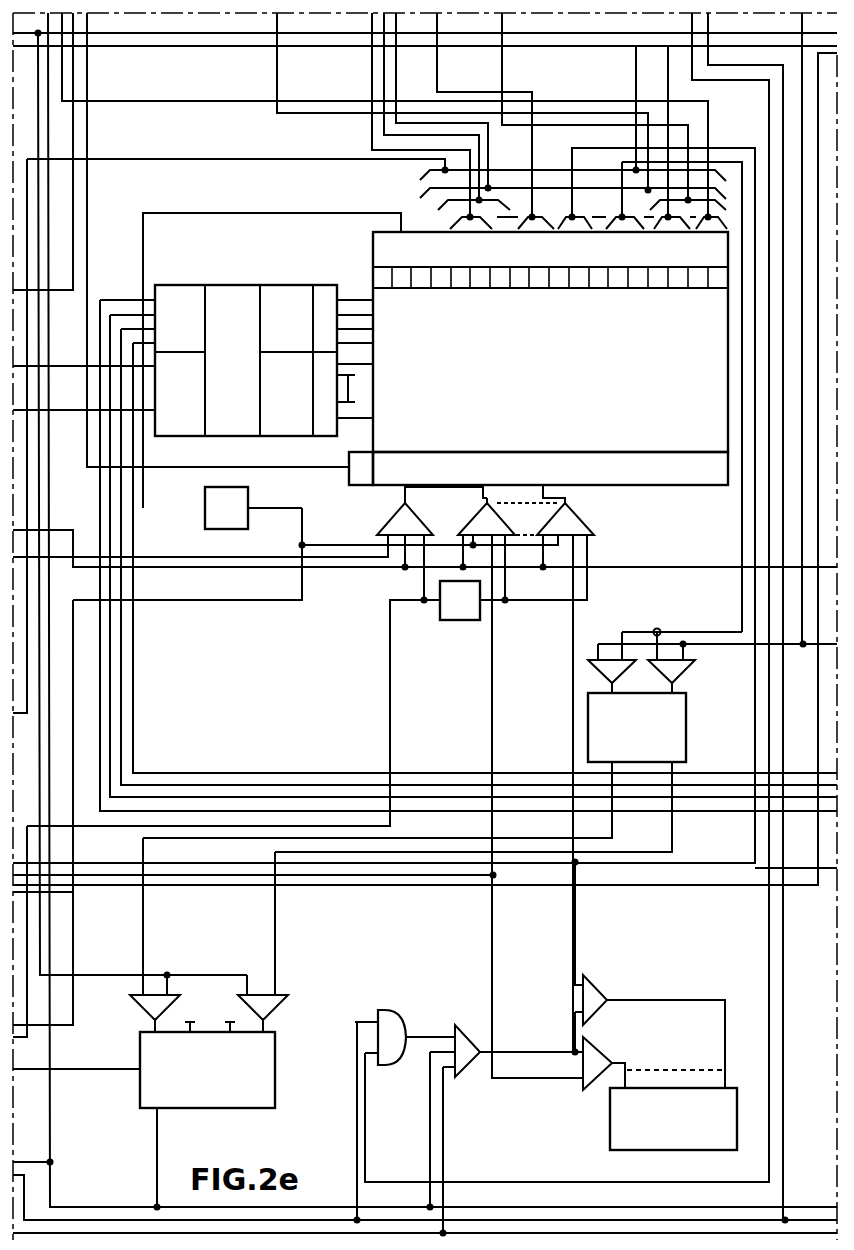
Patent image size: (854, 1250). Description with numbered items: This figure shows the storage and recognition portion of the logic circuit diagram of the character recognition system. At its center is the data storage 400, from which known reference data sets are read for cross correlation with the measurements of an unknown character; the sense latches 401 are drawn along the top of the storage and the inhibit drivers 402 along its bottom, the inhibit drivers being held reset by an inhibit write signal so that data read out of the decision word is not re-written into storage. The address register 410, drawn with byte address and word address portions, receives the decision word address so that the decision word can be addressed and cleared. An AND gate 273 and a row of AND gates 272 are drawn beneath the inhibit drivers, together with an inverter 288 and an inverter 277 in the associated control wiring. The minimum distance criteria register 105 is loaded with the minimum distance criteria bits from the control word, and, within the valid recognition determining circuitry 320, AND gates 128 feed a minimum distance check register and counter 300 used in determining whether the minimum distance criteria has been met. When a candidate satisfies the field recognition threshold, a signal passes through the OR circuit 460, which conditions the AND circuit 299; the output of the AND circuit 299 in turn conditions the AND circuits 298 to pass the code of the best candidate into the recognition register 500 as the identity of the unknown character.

The data storage 400 is at (628, 384).
The sense latches 401 is at (583, 263).
The inhibit drivers 402 is at (588, 479).
The address register 410 is at (303, 437).
The inverter 288 is at (250, 492).
The AND gate 273 is at (392, 518).
The AND gates 272 is at (549, 515).
The inverter 277 is at (454, 622).
The minimum distance criteria register 105 is at (688, 749).
The AND gates 128 is at (236, 1002).
The minimum distance check register and counter 300 is at (278, 1111).
The valid recognition determining circuitry 320 is at (328, 1001).
The logical OR circuit 460 is at (403, 1018).
The logical AND circuit 299 is at (468, 1075).
The logical AND circuits 298 is at (610, 1041).
The recognition register 500 is at (608, 1120).